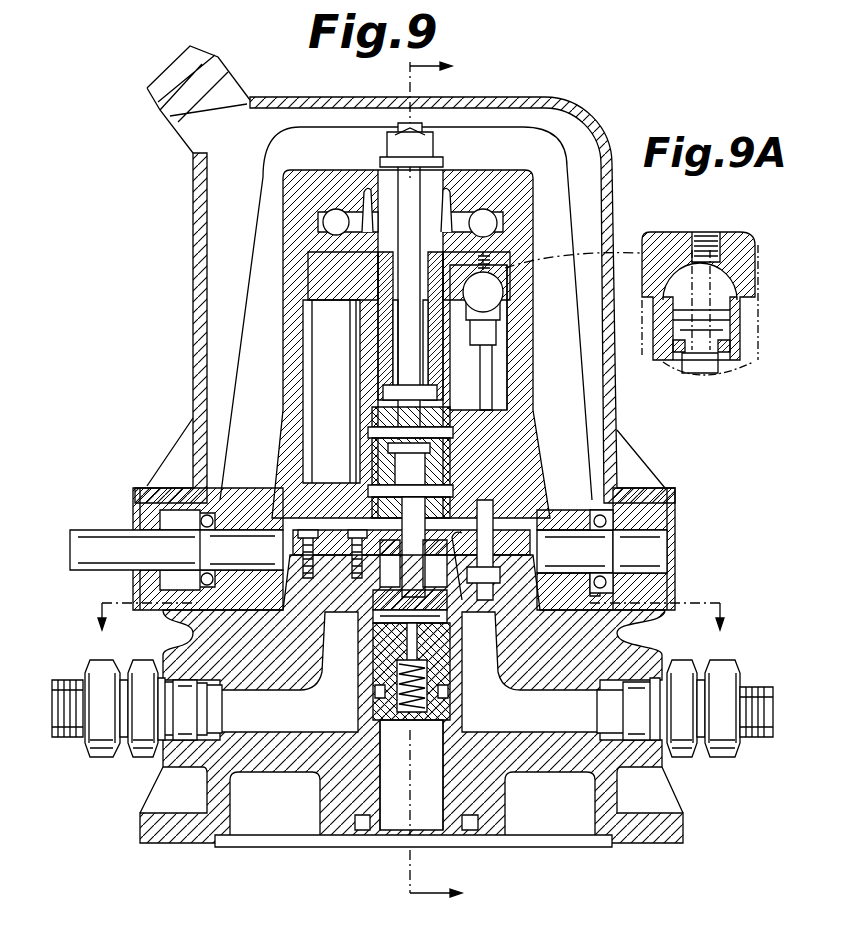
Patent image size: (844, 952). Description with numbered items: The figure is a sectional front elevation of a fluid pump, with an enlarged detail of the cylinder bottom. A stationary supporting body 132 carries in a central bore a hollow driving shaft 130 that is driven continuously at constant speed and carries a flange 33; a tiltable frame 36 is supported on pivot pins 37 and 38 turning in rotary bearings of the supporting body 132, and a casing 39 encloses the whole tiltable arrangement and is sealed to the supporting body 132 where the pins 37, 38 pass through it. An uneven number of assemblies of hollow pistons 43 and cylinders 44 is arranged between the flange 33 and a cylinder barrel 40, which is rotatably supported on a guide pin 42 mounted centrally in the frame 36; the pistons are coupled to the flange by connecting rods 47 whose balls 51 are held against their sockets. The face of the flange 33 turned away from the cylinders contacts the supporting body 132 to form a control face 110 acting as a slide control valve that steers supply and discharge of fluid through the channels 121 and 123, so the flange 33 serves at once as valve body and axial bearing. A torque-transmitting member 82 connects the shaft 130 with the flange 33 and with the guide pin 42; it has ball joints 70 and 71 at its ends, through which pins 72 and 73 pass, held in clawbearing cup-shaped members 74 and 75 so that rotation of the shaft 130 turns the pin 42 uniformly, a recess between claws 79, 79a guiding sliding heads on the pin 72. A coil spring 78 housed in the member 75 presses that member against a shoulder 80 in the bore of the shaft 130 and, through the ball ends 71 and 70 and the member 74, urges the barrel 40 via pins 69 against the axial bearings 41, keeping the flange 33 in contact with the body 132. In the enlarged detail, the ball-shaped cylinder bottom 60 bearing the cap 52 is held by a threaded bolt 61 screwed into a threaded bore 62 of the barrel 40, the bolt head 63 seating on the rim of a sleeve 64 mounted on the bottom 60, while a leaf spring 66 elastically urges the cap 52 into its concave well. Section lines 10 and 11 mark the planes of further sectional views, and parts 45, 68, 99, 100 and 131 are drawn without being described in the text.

In FIG. 9, the section line 10- 10 is at (416, 621).
In FIG. 9, the section line 11- 11 is at (441, 480).
In FIG. 9, the flange 33 is at (520, 556).
In FIG. 9, the tiltable frame 36 is at (309, 177).
In FIG. 9, the pivot pin 37 is at (660, 552).
In FIG. 9, the pivot pin 38 is at (90, 540).
In FIG. 9, the casing 39 is at (458, 103).
In FIG. 9, the cylinder barrel 40 is at (507, 260).
In FIG. 9, the axial bearings 41 is at (492, 214).
In FIG. 9, the guide pin 42 is at (421, 330).
In FIG. 9, the piston 43 is at (508, 380).
In FIG. 9, the cylinder 44 is at (318, 329).
In FIG. 9, the skirt 45 is at (332, 492).
In FIG. 9, the piston connecting rod 47 is at (470, 482).
In FIG. 9, the ball 51 is at (490, 545).
In FIG. 9A, the cap 52 is at (715, 262).
In FIG. 9, the cylinder bottom 60 is at (551, 282).
In FIG. 9A, the cylinder bottom 60 is at (720, 312).
In FIG. 9A, the threaded bolt 61 is at (708, 233).
In FIG. 9A, the threaded bore 62 is at (690, 233).
In FIG. 9A, the bolt head 63 is at (700, 366).
In FIG. 9A, the sleeve 64 is at (715, 336).
In FIG. 9A, the leaf spring 66 is at (680, 343).
In FIG. 9, the piston 68 is at (433, 455).
In FIG. 9, the pins 69 is at (370, 428).
In FIG. 9, the ball joint 70 is at (402, 470).
In FIG. 9, the ball joint 71 is at (423, 630).
In FIG. 9, the pin 72 is at (378, 490).
In FIG. 9, the pin 73 is at (362, 642).
In FIG. 9, the cup-shaped member 74 is at (440, 412).
In FIG. 9, the cup-shaped member 75 is at (443, 684).
In FIG. 9, the spring 78 is at (413, 718).
In FIG. 9, the bore wall 79 is at (397, 723).
In FIG. 9, the claw 79a is at (470, 532).
In FIG. 9, the shoulder 80 is at (447, 727).
In FIG. 9, the torque-transmitting member 82 is at (402, 527).
In FIG. 9, the chamber 99 is at (362, 612).
In FIG. 9, the chamber 100 is at (470, 630).
In FIG. 9, the control face 110 is at (622, 632).
In FIG. 9, the fluid conveying channel 121 is at (757, 722).
In FIG. 9, the fluid conveying channel 123 is at (75, 722).
In FIG. 9, the hollow driving shaft 130 is at (457, 832).
In FIG. 9, the port boss 131 is at (648, 757).
In FIG. 9, the stationary supporting body 132 is at (200, 634).